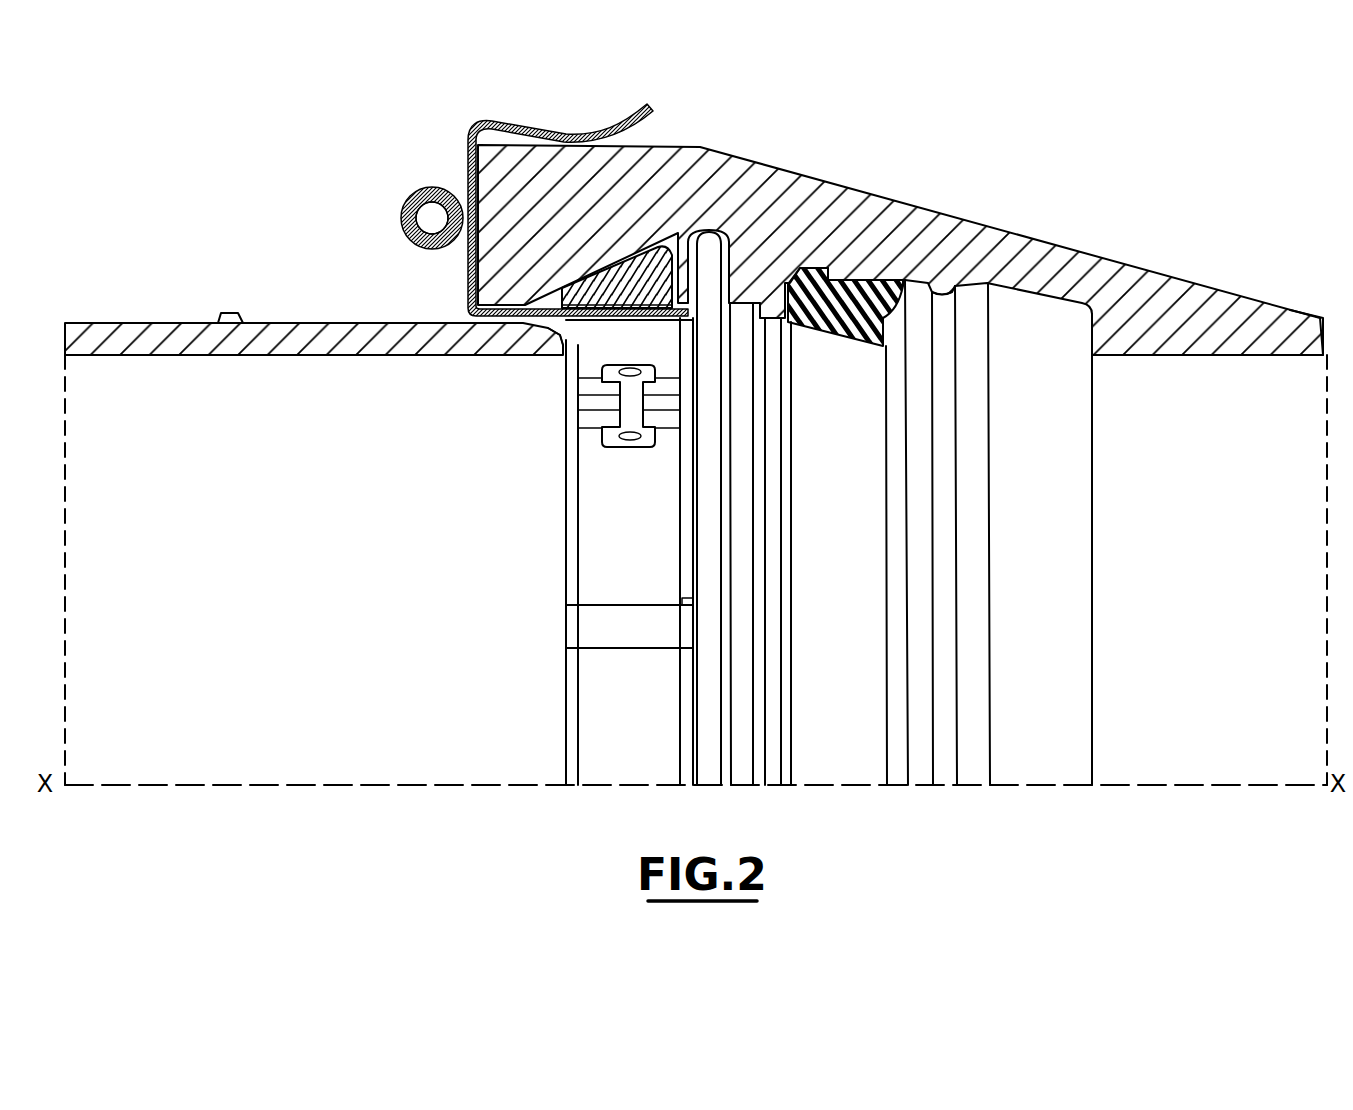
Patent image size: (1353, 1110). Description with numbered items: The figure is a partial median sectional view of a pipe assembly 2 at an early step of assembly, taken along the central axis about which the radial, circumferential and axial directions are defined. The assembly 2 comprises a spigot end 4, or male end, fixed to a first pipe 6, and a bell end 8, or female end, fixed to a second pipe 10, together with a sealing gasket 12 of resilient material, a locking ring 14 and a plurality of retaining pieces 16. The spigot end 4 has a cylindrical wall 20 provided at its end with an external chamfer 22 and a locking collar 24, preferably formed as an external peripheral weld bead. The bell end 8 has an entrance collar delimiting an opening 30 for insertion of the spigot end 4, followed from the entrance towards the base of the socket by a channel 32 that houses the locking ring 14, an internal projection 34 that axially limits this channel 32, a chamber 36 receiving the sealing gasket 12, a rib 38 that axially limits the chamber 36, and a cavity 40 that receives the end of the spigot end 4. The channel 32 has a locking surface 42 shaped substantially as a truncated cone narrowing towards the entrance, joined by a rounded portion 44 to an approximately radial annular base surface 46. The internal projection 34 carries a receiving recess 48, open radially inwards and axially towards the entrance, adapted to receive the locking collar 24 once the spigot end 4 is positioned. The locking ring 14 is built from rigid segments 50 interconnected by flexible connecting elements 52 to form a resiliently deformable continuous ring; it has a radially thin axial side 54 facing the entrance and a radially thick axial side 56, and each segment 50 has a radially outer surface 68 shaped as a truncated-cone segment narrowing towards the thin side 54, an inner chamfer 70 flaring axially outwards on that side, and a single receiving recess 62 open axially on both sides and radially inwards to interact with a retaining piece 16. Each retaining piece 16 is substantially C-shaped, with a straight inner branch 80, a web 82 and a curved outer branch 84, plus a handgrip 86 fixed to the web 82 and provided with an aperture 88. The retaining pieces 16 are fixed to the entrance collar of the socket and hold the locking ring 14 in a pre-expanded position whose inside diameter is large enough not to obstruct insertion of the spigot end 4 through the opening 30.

The pipe assembly 2 is at (920, 147).
The spigot end 4 is at (228, 268).
The first pipe 6 is at (122, 340).
The bell end 8 is at (1020, 212).
The second pipe 10 is at (1298, 345).
The sealing gasket 12 is at (846, 328).
The locking ring 14 is at (553, 500).
The retaining piece 16 is at (481, 101).
The cylindrical wall 20 is at (358, 340).
The external chamfer 22 is at (552, 350).
The locking collar 24 is at (234, 314).
The opening 30 is at (440, 305).
The channel 32 is at (710, 380).
The internal projection 34 is at (765, 300).
The chamber 36 is at (920, 330).
The rib 38 is at (945, 290).
The cavity 40 is at (1040, 383).
The locking surface 42 is at (683, 255).
The rounded portion 44 is at (709, 250).
The annular base surface 46 is at (733, 235).
The receiving recess 48 is at (748, 330).
The segment 50 is at (688, 768).
The flexible connecting element 52 is at (627, 405).
The thin axial side 54 is at (547, 296).
The thick axial side 56 is at (703, 222).
The receiving recess 62 is at (583, 627).
The radially outer surface 68 is at (634, 236).
The inner chamfer 70 is at (565, 560).
The straight inner branch 80 is at (622, 312).
The web 82 is at (467, 133).
The curved outer branch 84 is at (568, 136).
The handgrip 86 is at (405, 212).
The aperture 88 is at (430, 212).